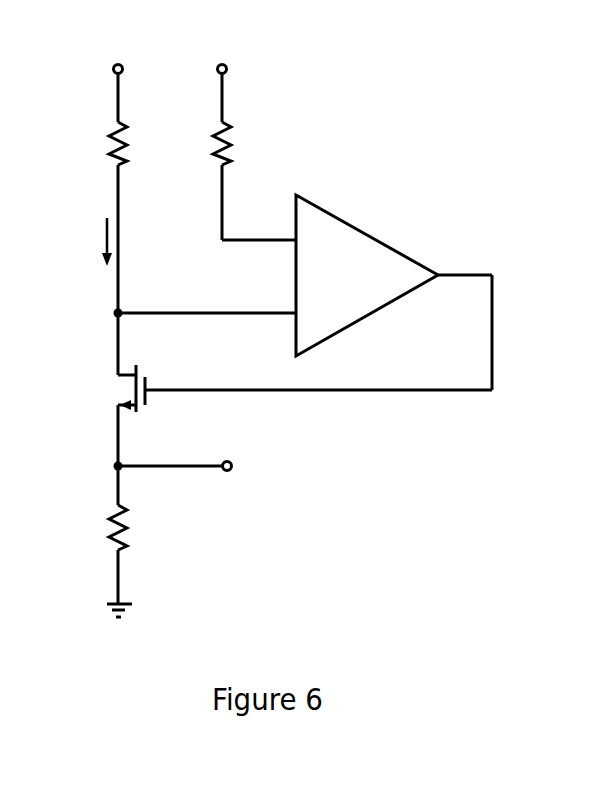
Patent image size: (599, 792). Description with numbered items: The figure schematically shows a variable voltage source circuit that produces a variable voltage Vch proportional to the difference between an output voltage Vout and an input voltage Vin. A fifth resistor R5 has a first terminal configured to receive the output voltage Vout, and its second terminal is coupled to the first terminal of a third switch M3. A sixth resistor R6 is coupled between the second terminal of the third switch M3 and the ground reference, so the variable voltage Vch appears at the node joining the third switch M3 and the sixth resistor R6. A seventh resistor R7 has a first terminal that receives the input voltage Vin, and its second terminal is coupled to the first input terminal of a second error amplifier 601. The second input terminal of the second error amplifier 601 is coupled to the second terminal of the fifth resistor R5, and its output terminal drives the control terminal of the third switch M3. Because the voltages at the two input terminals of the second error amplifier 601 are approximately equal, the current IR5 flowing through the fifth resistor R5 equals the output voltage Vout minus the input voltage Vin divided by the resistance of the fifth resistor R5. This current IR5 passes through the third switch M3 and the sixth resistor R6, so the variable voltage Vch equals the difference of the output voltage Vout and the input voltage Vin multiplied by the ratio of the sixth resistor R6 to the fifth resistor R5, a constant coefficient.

The fifth resistor R5 is at (95, 143).
The sixth resistor R6 is at (97, 527).
The seventh resistor R7 is at (233, 181).
The third switch M3 is at (106, 388).
The second error amplifier 601 is at (305, 292).
The current flowing through the resistor R5 IR5 is at (84, 242).
The output voltage Vout is at (116, 56).
The input voltage Vin is at (219, 80).
The variable voltage Vch is at (200, 466).